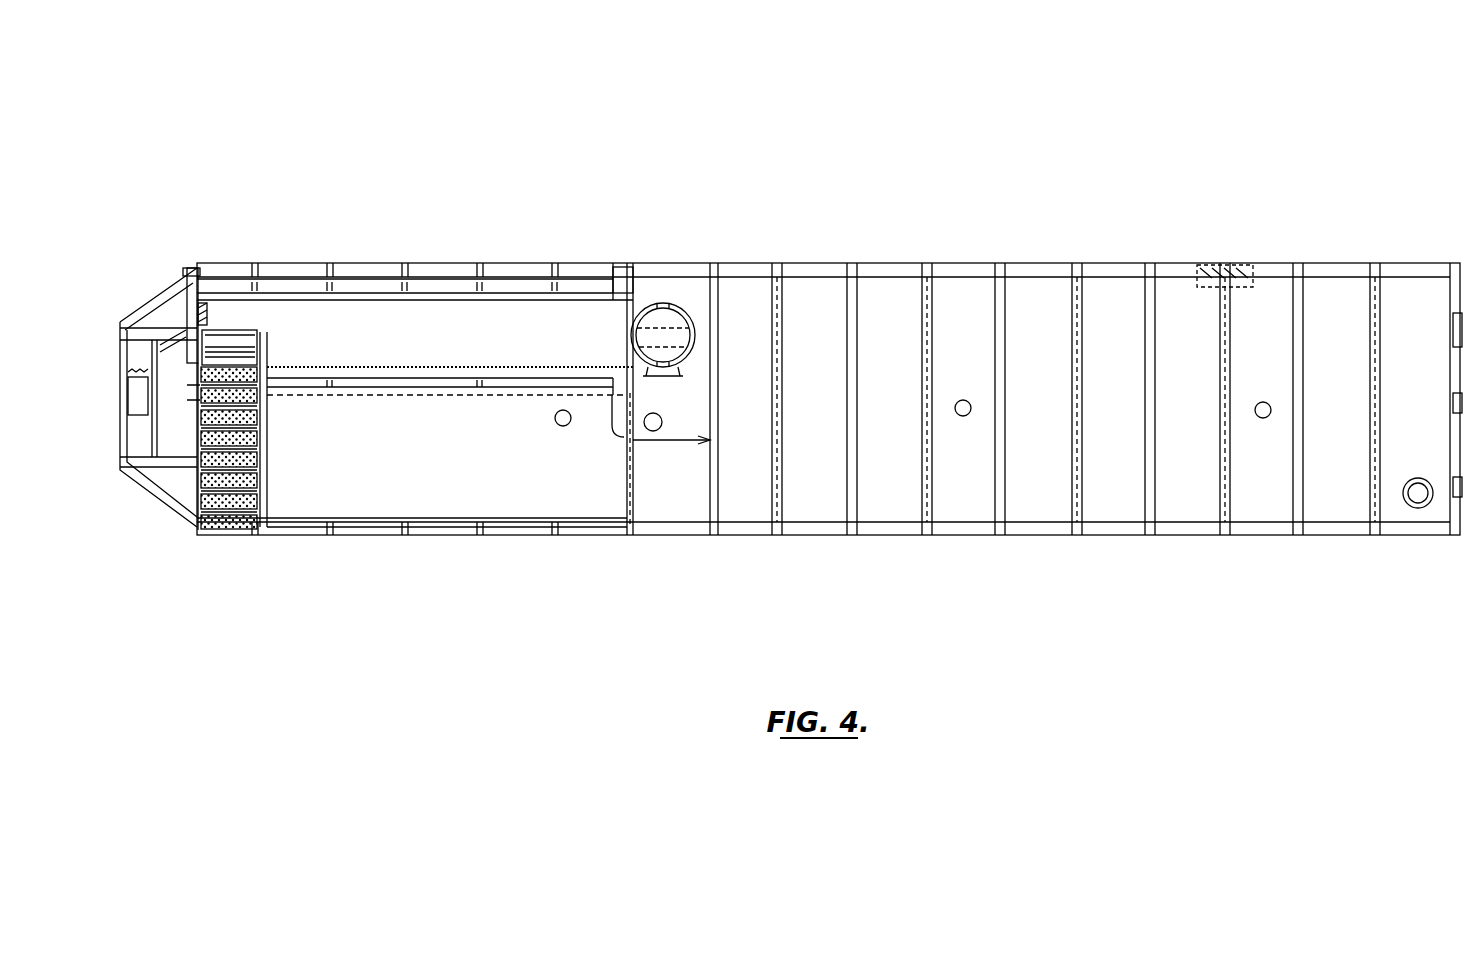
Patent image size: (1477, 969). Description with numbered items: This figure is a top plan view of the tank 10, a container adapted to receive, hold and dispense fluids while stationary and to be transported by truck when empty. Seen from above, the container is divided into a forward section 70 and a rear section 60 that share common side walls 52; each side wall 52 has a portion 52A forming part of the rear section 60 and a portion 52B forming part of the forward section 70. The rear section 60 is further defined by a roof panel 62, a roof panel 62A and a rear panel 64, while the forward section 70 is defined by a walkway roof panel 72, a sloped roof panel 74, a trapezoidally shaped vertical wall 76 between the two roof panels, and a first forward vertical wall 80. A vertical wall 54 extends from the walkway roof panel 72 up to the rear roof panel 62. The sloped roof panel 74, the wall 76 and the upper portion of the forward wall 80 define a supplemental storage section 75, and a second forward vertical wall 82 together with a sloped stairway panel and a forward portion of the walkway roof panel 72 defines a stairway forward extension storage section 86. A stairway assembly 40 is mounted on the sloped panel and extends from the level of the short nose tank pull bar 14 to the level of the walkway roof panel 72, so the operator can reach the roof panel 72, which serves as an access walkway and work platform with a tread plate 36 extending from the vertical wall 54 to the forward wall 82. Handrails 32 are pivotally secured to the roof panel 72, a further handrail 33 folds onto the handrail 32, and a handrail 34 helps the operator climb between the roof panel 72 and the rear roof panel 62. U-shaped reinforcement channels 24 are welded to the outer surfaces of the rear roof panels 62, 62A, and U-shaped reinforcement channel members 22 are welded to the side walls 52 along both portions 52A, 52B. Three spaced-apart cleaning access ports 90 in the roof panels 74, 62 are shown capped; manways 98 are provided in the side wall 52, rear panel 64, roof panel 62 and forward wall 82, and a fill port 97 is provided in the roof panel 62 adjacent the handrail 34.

The tank 10 is at (883, 112).
The short nose tank pull bar 14 is at (128, 445).
The U-shaped reinforcement channel members 22 is at (849, 535).
The U-shaped reinforcement channels 24 is at (848, 459).
The handrails 32 is at (290, 290).
The further handrail 33 is at (170, 300).
The handrail 34 is at (720, 300).
The tread plate 36 is at (560, 330).
The stairway assembly 40 is at (187, 490).
The side walls 52 is at (893, 272).
The side wall portion 52A is at (1135, 273).
The side wall portion 52B is at (455, 265).
The vertical wall 54 is at (621, 272).
The rear section 60 is at (1234, 210).
The roof panel 62 is at (1255, 500).
The roof panel 62A is at (677, 500).
The rear panel 64 is at (1462, 347).
The forward section 70 is at (380, 231).
The walkway roof panel 72 is at (532, 295).
The sloped roof panel 74 is at (523, 500).
The supplemental storage section 75 is at (365, 508).
The trapezoidally shaped vertical wall 76 is at (518, 385).
The first forward vertical wall 80 is at (262, 428).
The second forward vertical wall 82 is at (123, 440).
The stairway forward extension storage section 86 is at (184, 383).
The cleaning access ports 90 is at (562, 420).
The fill port 97 is at (653, 430).
The manways 98 is at (682, 340).